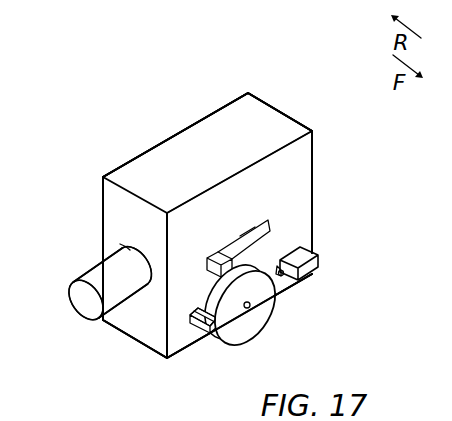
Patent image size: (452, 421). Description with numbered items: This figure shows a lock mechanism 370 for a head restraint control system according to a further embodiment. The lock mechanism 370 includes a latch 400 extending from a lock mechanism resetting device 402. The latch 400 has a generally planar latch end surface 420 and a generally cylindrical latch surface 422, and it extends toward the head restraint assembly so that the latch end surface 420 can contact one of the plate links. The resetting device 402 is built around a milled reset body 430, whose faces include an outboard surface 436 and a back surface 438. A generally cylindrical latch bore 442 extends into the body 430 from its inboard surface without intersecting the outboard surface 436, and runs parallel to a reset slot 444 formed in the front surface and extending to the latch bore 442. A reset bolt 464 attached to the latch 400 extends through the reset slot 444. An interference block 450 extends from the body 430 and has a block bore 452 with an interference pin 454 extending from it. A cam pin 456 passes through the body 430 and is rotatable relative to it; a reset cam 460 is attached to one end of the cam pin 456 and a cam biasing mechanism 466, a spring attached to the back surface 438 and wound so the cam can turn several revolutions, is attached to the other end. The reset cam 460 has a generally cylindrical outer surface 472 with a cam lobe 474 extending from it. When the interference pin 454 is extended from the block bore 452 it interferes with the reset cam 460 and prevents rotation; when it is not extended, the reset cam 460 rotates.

The lock mechanism 370 is at (283, 91).
The latch 400 is at (73, 318).
The lock mechanism resetting device 402 is at (342, 153).
The latch end surface 420 is at (86, 299).
The latch surface 422 is at (100, 268).
The reset body 430 is at (217, 101).
The outboard surface 436 is at (306, 124).
The back surface 438 is at (174, 133).
The latch bore 442 is at (122, 246).
The reset slot 444 is at (264, 217).
The interference block 450 is at (312, 267).
The block bore 452 is at (270, 277).
The interference pin 454 is at (286, 280).
The cam pin 456 is at (251, 306).
The reset cam 460 is at (266, 334).
The reset bolt 464 is at (182, 203).
The cam biasing mechanism 466 is at (110, 202).
The outer surface 472 is at (218, 295).
The cam lobe 474 is at (220, 336).